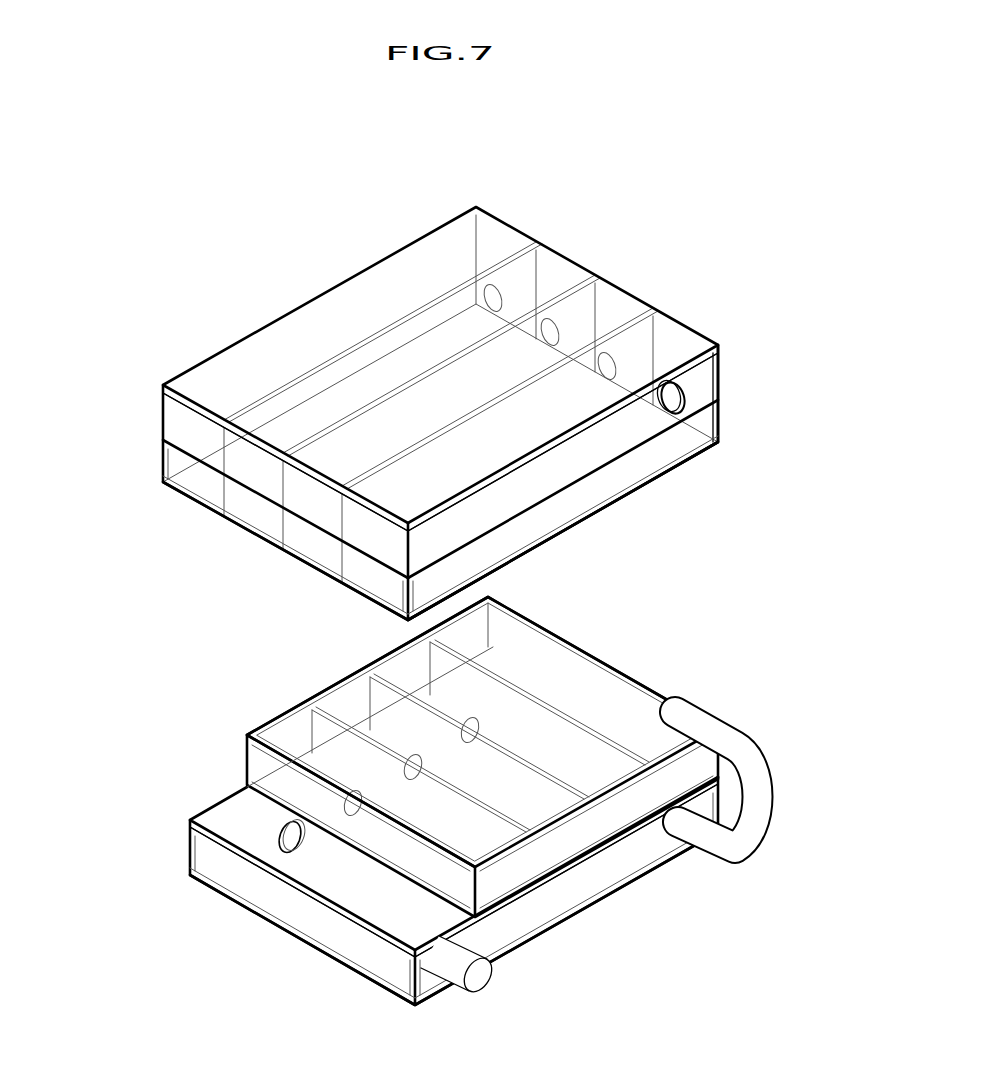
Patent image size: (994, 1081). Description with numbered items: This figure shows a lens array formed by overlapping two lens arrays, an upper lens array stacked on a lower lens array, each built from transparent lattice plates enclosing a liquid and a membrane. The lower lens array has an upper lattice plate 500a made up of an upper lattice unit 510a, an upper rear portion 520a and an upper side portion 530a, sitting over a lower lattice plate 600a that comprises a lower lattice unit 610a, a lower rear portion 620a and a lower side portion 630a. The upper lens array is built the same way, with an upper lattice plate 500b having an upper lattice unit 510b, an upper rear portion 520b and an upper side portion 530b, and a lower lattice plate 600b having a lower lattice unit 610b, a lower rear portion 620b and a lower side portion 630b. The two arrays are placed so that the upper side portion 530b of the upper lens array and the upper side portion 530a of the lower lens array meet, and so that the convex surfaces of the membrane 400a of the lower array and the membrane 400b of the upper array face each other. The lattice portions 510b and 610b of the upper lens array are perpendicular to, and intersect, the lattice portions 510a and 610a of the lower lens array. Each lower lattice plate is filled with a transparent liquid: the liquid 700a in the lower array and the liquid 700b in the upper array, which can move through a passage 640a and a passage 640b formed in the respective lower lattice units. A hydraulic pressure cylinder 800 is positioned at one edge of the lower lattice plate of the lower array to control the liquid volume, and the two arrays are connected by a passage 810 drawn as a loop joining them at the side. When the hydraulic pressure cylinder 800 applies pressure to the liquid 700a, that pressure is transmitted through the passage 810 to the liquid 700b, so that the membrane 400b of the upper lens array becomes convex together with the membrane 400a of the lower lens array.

The membrane of the lower lens array 400a is at (692, 778).
The membrane of the upper lens array 400b is at (277, 503).
The upper lattice plate of the lower lens array 500a is at (330, 595).
The upper lattice plate of the upper lens array 500b is at (790, 505).
The upper lattice unit of the lower lens array 510a is at (307, 733).
The upper lattice unit of the upper lens array 510b is at (658, 452).
The upper rear portion of the lower lens array 520a is at (347, 676).
The upper rear portion of the upper lens array 520b is at (713, 422).
The upper side portion of the lower lens array 530a is at (402, 663).
The upper side portion of the upper lens array 530b is at (623, 497).
The lower lattice plate of the lower lens array 600a is at (740, 923).
The lower lattice plate of the upper lens array 600b is at (100, 405).
The lower lattice unit of the lower lens array 610a is at (617, 882).
The lower lattice unit of the upper lens array 610b is at (187, 447).
The lower rear portion of the lower lens array 620a is at (580, 907).
The lower rear portion of the upper lens array 620b is at (187, 416).
The lower side portion of the lower lens array 630a is at (660, 878).
The lower side portion of the upper lens array 630b is at (187, 489).
The passage of the lower lens array 640a is at (268, 828).
The passage of the upper lens array 640b is at (686, 396).
The liquid of the lower lens array 700a is at (500, 928).
The liquid of the upper lens array 700b is at (223, 373).
The hydraulic pressure cylinder 800 is at (482, 983).
The passage 810 is at (758, 795).